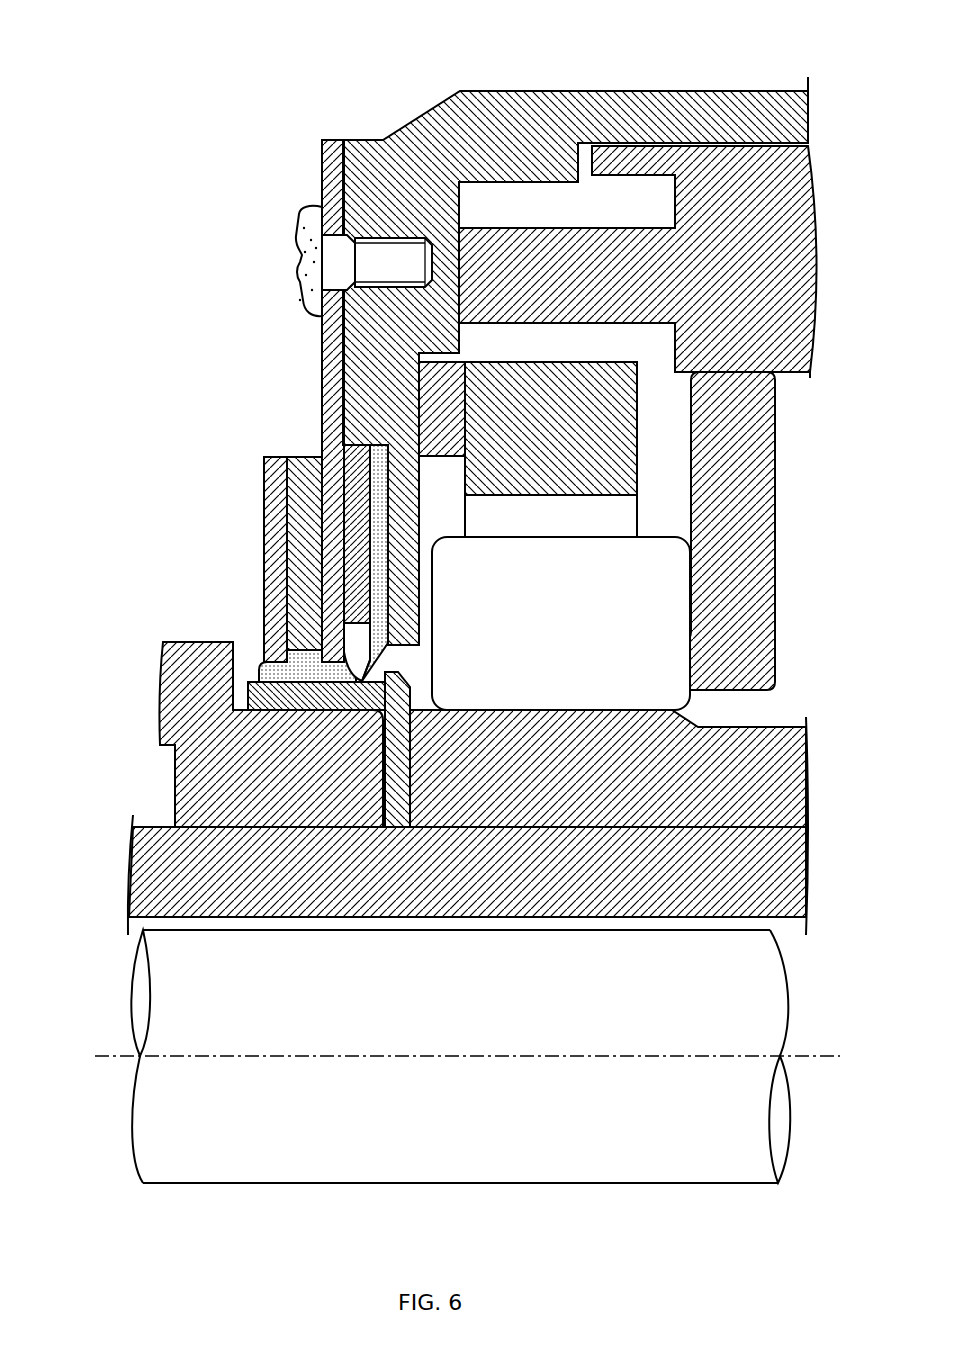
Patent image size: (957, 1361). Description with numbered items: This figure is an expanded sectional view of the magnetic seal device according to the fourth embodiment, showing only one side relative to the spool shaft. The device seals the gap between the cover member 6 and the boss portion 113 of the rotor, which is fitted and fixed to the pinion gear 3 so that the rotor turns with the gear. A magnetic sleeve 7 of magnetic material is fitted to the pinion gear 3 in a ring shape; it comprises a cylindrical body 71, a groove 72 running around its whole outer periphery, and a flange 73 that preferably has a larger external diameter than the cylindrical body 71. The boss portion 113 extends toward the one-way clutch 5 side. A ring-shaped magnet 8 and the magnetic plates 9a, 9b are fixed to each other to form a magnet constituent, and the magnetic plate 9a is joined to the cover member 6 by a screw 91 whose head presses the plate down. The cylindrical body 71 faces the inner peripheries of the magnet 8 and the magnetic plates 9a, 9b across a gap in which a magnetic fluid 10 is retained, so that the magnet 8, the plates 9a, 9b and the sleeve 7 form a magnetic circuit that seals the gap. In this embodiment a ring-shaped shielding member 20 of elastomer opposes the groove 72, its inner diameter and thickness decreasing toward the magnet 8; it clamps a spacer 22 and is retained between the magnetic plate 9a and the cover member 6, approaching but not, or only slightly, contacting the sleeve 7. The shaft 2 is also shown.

The shaft 2 is at (165, 1130).
The pinion gear 3 is at (157, 815).
The one-way clutch 5 is at (546, 364).
The cover member 6 is at (392, 133).
The magnetic sleeve 7 is at (403, 815).
The magnet 8 is at (238, 496).
The magnetic plate 9a is at (322, 181).
The magnetic plate 9b is at (263, 468).
The magnetic fluid 10 is at (302, 670).
The shielding member 20 is at (355, 470).
The spacer 22 is at (376, 447).
The cylindrical body 71 is at (250, 683).
The groove 72 is at (377, 680).
The flange 73 is at (393, 683).
The screw 91 is at (300, 228).
The boss portion 113 is at (177, 642).